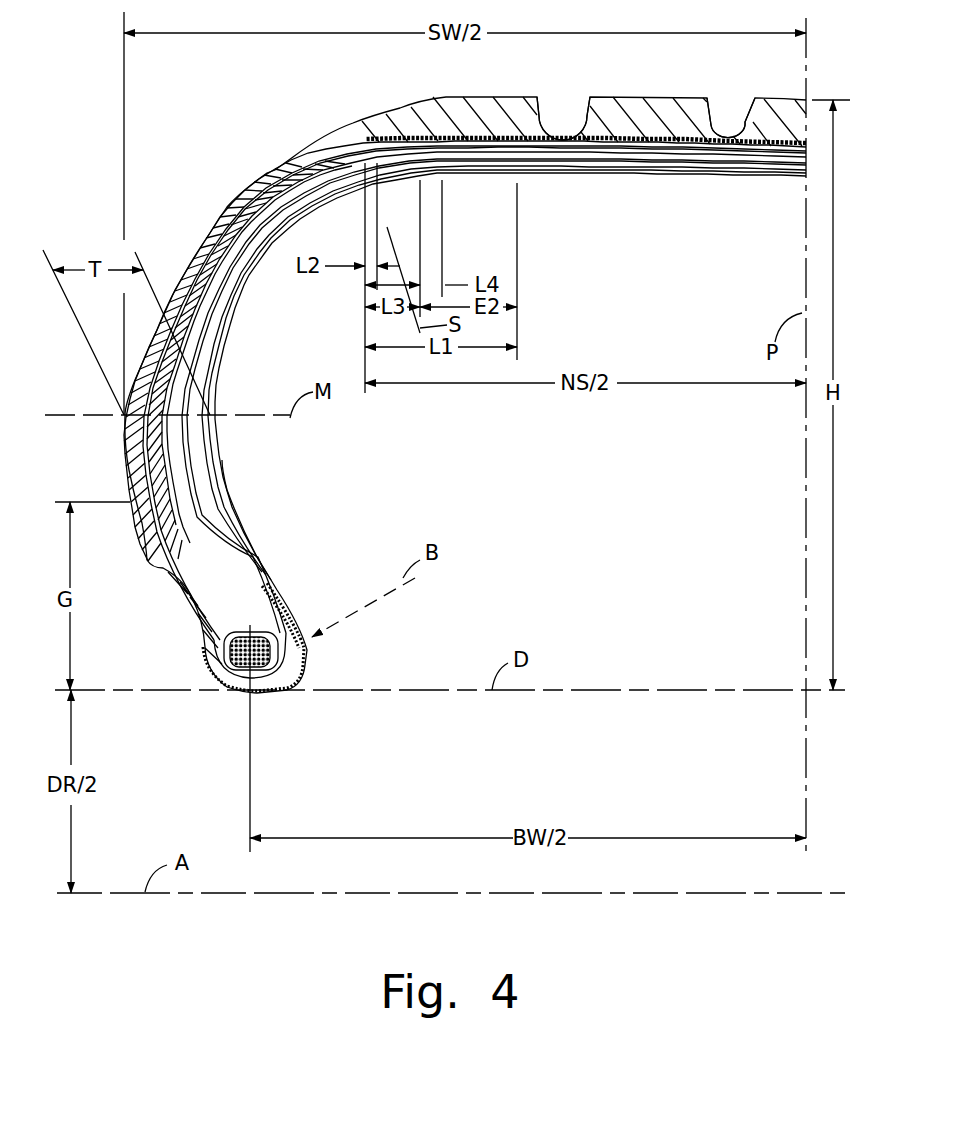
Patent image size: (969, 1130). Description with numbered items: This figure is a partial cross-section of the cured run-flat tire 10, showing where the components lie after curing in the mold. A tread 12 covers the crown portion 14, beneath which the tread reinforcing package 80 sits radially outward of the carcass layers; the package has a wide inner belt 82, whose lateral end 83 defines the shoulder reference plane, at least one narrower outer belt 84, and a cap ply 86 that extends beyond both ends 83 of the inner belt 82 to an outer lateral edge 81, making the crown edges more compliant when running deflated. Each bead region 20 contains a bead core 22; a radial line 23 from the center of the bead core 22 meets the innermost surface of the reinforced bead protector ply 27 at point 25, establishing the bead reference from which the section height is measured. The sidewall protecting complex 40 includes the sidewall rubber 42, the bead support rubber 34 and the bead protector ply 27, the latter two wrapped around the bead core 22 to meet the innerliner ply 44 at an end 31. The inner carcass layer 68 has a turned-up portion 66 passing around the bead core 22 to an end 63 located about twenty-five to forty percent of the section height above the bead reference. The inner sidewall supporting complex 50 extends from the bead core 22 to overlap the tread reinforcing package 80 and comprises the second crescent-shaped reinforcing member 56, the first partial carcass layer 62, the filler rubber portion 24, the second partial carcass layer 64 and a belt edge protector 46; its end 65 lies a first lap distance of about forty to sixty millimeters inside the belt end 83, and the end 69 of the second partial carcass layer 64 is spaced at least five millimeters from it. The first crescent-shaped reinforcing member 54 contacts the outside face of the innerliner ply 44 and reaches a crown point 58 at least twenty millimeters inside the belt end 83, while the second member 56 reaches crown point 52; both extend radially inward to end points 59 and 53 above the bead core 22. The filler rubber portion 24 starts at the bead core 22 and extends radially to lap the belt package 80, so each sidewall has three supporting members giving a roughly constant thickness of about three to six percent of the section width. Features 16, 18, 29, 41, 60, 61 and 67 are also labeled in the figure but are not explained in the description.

The run-flat tire 10 is at (212, 138).
The tread 12 is at (643, 123).
The crown portion 14 is at (490, 96).
The tread rib 16 is at (613, 98).
The belt edge reference 18 is at (365, 385).
The bead region 20 is at (310, 637).
The bead core 22 is at (218, 687).
The radial line 23 is at (250, 760).
The filler rubber portion 24 is at (247, 550).
The point 25 is at (245, 692).
The bead protector ply 27 is at (278, 700).
The belt edge angle line 29 is at (384, 205).
The end of the protector ply 31 is at (263, 565).
The bead support rubber 34 is at (162, 542).
The sidewall protecting complex 40 is at (218, 210).
The shoulder 41 is at (305, 143).
The sidewall rubber 42 is at (133, 440).
The innerliner ply 44 is at (290, 277).
The belt edge protector 46 is at (285, 172).
The inner sidewall supporting complex 50 is at (197, 247).
The crown point 52 is at (437, 180).
The end point 53 is at (270, 583).
The first crescent-shaped reinforcing member 54 is at (285, 230).
The second crescent-shaped reinforcing member 56 is at (217, 287).
The crown point 58 is at (423, 178).
The end point 59 is at (255, 545).
The belt structure 60 is at (533, 181).
The chafer strip 61 is at (207, 630).
The first partial carcass layer 62 is at (215, 480).
The end 63 is at (158, 505).
The second partial carcass layer 64 is at (225, 500).
The end of the supporting complex 65 is at (525, 173).
The turned-up portion 66 is at (235, 520).
The chafer 67 is at (277, 602).
The inner carcass layer 68 is at (205, 470).
The end of the second partial carcass layer 69 is at (490, 175).
The tread reinforcing package 80 is at (383, 138).
The outer lateral edge 81 is at (318, 148).
The inner belt 82 is at (537, 133).
The end of the inner belt 83 is at (347, 137).
The outer belt 84 is at (720, 135).
The cap ply 86 is at (430, 99).